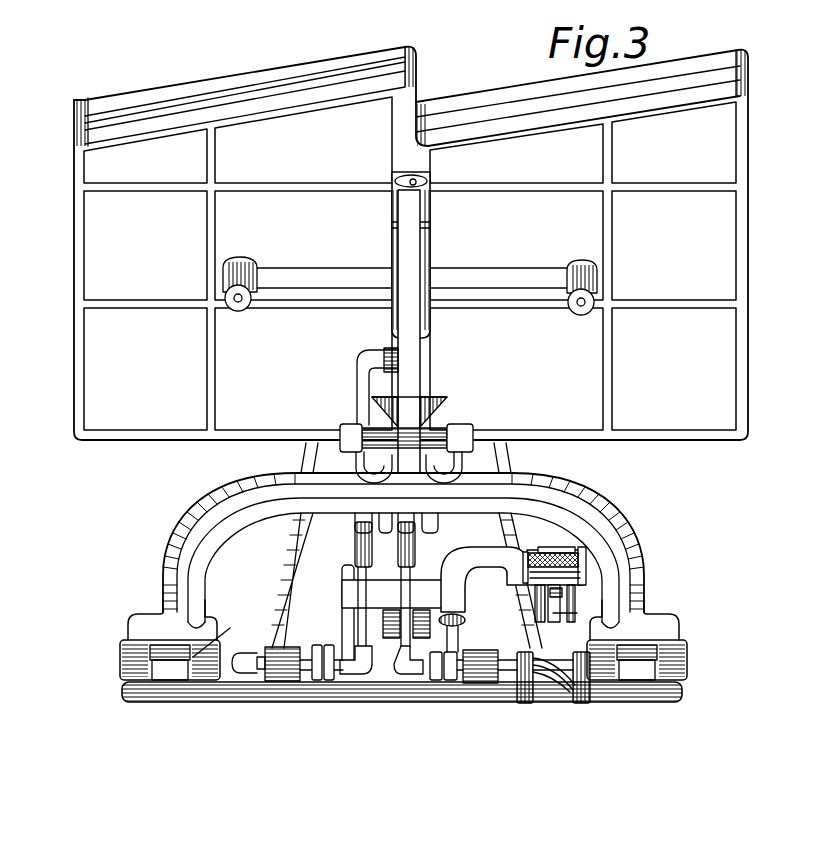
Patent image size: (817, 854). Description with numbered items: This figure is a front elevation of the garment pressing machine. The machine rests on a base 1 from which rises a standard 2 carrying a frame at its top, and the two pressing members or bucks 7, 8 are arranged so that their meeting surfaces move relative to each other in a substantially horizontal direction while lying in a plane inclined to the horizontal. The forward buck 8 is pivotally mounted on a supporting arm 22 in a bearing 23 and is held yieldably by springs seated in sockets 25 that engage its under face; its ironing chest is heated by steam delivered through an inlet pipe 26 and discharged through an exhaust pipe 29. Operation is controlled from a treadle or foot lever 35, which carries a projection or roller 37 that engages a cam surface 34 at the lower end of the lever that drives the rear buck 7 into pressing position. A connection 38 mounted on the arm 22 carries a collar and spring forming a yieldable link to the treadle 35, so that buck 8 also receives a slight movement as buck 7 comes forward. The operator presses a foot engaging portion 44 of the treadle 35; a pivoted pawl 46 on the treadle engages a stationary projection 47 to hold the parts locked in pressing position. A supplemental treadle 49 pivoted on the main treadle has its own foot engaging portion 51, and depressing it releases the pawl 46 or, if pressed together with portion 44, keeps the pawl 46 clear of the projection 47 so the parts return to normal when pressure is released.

The base 1 is at (207, 690).
The standard 2 is at (403, 545).
The pressing member or buck 7 is at (752, 72).
The pressing member or buck 8 is at (410, 263).
The supporting arm 22 is at (408, 373).
The bearing 23 is at (430, 195).
The sockets 25 is at (555, 327).
The inlet pipe 26 is at (363, 392).
The exhaust pipe 29 is at (408, 577).
The cam surface 34 is at (385, 645).
The treadle or foot lever 35 is at (573, 607).
The projection or roller 37 is at (397, 607).
The connection 38 is at (460, 437).
The foot engaging portion 44 is at (572, 548).
The pivoted pawl 46 is at (567, 615).
The stationary part or projection 47 is at (550, 667).
The supplemental treadle 49 is at (585, 590).
The foot engaging portion 51 is at (558, 552).